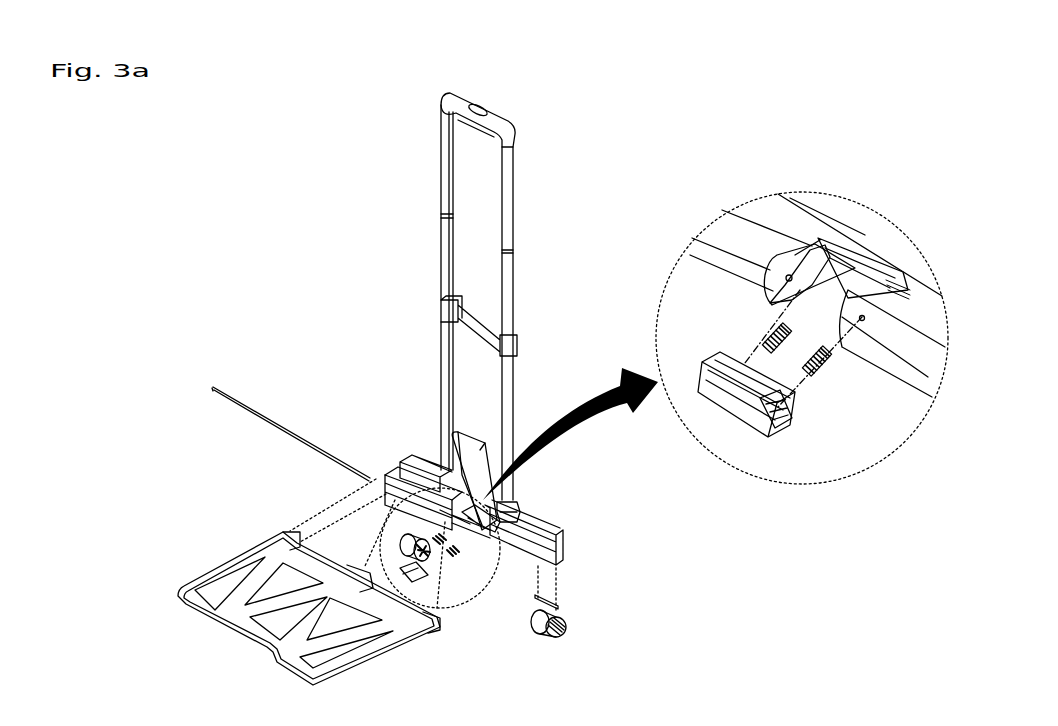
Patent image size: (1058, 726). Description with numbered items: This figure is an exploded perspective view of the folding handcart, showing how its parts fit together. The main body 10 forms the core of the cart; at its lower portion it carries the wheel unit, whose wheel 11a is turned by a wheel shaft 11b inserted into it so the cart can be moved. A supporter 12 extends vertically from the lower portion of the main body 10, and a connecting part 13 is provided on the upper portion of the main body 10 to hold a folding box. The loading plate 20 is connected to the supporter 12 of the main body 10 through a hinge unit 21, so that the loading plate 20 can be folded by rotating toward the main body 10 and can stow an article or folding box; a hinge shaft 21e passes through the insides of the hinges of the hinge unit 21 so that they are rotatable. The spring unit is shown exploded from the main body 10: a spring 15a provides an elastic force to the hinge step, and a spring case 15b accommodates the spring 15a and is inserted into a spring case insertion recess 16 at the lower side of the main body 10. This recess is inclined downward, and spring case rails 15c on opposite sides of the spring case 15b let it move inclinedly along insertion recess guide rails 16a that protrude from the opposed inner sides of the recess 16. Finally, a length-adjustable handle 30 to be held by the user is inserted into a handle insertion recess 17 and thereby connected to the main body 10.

The main body 10 is at (406, 450).
The wheel 11a is at (566, 627).
The wheel shaft 11b is at (549, 604).
The supporter 12 is at (513, 542).
The connecting part 13 is at (470, 455).
The spring 15a is at (453, 554).
The spring case 15b is at (405, 575).
The spring case rails 15c is at (425, 580).
The spring case insertion recess 16 is at (470, 515).
The insertion recess guide rails 16a is at (410, 480).
The handle insertion recess 17 is at (513, 510).
The loading plate 20 is at (206, 624).
The hinge unit 21 is at (360, 580).
The hinge shaft 21e is at (240, 400).
The handle 30 is at (517, 185).